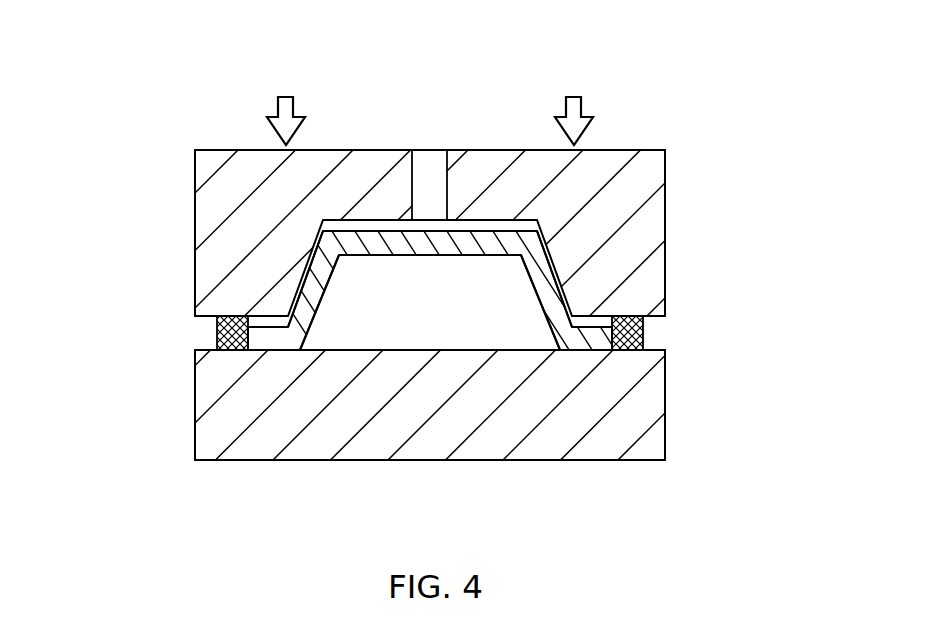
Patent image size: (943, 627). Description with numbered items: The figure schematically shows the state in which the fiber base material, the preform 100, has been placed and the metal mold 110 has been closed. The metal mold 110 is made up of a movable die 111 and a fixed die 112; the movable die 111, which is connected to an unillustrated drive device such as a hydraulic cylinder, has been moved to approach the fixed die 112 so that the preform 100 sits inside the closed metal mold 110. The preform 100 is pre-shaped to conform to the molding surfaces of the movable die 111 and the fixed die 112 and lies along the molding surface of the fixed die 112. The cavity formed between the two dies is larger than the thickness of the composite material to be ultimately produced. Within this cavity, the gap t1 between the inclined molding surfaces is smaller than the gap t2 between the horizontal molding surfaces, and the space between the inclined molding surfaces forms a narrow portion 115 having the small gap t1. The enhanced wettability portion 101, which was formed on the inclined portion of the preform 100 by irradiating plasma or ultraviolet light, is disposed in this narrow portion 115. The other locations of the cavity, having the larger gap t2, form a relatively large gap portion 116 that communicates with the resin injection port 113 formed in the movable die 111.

The preform 100 is at (332, 240).
The enhanced wettability portion 101 is at (316, 317).
The metal mold 110 is at (471, 317).
The movable die 111 is at (652, 172).
The fixed die 112 is at (643, 400).
The resin injection port 113 is at (425, 166).
The narrow portion 115 is at (316, 247).
The relatively large gap portion 116 is at (537, 220).
The gap between the inclined molding surfaces t1 is at (345, 294).
The gap between the horizontal molding surfaces t2 is at (372, 283).